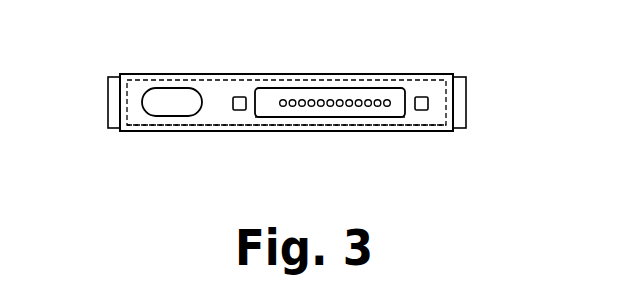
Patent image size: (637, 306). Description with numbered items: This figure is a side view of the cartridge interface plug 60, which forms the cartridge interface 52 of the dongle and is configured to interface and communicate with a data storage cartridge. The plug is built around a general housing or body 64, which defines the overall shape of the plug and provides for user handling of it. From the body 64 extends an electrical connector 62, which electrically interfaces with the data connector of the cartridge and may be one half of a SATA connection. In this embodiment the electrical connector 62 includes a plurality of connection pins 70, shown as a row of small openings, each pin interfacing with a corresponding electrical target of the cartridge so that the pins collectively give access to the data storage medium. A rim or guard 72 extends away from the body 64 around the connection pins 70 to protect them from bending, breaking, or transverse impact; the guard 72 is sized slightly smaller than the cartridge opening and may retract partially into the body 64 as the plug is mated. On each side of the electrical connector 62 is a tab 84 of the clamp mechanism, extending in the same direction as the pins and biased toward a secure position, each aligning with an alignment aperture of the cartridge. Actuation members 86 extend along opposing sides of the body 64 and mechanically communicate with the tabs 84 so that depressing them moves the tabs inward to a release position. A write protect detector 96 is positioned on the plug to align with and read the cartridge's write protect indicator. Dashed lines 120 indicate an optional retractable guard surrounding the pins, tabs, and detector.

The cartridge interface plug 60 is at (456, 72).
The cartridge interface 52 is at (449, 131).
The electrical connector 62 is at (337, 117).
The body 64 is at (142, 74).
The connection pins 70 is at (350, 100).
The guard 72 is at (388, 118).
The tabs 84 is at (240, 97).
The actuation members 86 is at (110, 100).
The write protect detector 96 is at (173, 107).
The retractable guard 120 is at (262, 131).